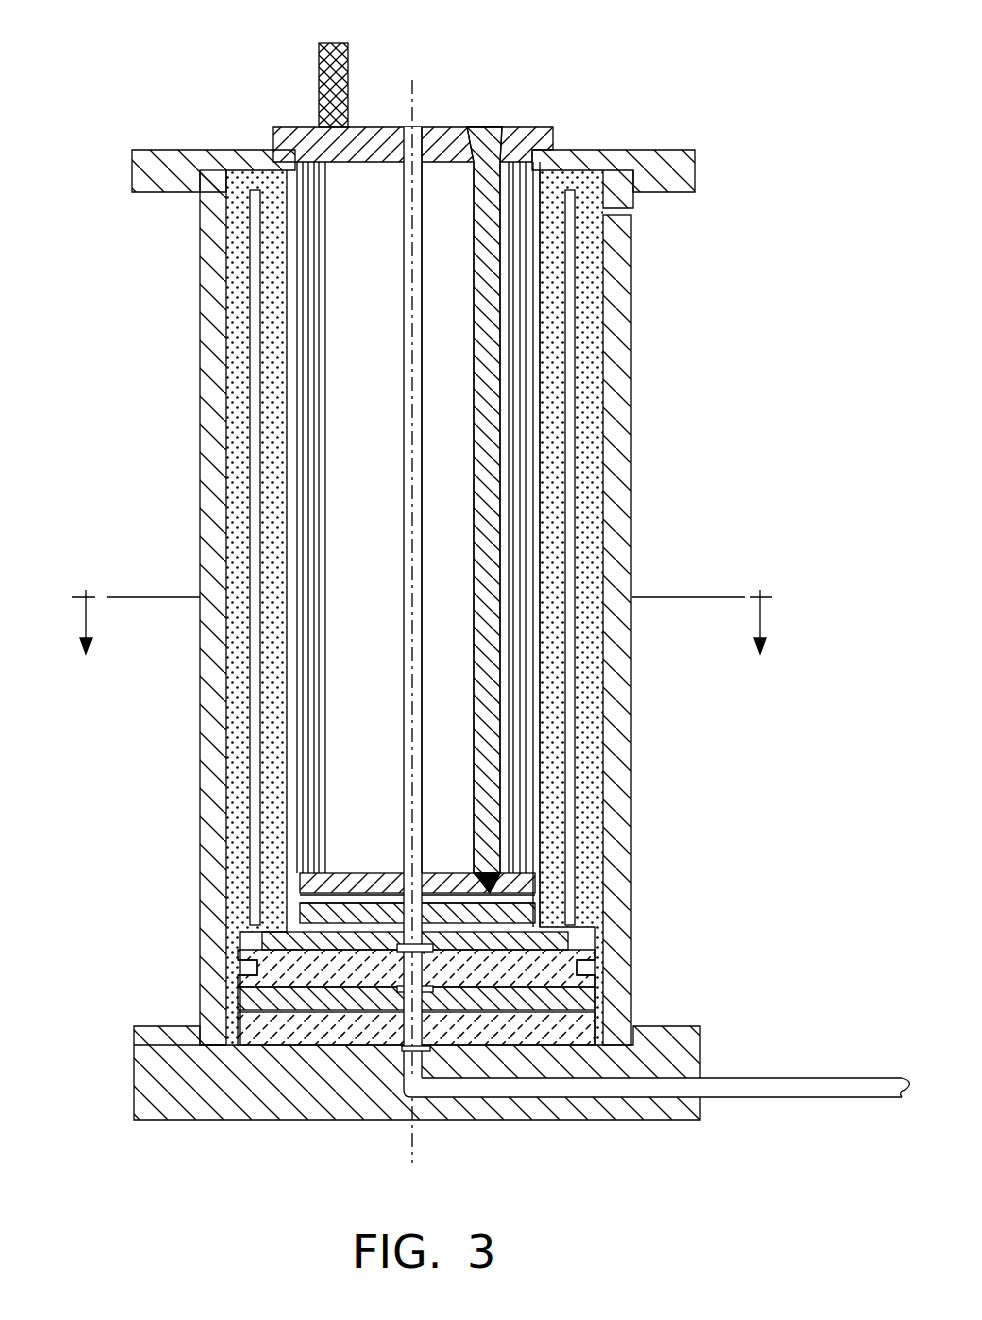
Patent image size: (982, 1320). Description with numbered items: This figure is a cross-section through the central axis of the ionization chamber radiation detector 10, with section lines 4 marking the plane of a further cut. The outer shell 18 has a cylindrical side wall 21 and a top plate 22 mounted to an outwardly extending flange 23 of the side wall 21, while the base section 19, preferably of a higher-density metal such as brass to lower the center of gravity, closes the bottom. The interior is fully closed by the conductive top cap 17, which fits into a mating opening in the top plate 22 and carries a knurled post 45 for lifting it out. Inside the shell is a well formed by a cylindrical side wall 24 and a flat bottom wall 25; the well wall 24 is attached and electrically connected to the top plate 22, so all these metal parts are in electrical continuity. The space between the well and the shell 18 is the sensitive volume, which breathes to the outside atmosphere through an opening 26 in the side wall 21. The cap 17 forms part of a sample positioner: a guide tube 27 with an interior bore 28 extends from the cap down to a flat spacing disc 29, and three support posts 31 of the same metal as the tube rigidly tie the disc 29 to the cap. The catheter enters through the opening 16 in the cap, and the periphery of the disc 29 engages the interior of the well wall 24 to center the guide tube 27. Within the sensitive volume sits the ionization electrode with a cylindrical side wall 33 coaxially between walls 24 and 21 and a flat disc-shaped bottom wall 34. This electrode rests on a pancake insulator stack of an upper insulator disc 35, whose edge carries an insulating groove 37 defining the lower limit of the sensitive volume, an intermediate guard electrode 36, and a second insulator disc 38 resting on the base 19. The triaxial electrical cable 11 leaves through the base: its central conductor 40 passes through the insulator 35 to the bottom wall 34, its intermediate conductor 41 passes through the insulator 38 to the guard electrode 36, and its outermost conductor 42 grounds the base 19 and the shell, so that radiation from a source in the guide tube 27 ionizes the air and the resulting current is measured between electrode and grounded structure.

The ionization chamber radiation detector 10 is at (162, 140).
The triaxial electrical cable 11 is at (757, 1078).
The opening 16 is at (415, 128).
The top cap 17 is at (530, 128).
The outer shell 18 is at (631, 748).
The base section 19 is at (135, 1100).
The cylindrical side wall 21 is at (200, 372).
The top plate 22 is at (648, 150).
The outwardly extending flange 23 is at (165, 192).
The cylindrical side wall of the well 24 is at (542, 245).
The flat bottom wall 25 is at (535, 915).
The opening 26 is at (630, 214).
The guide tube 27 is at (400, 285).
The interior bore 28 is at (421, 402).
The spacing disc 29 is at (400, 873).
The support posts 31 is at (478, 545).
The cylindrical side wall of the ionization electrode 33 is at (583, 577).
The flat disc-shaped bottom wall 34 is at (287, 928).
The insulator disc 35 is at (598, 998).
The intermediate guard electrode 36 is at (582, 967).
The insulating groove 37 is at (240, 978).
The second insulator disc 38 is at (243, 966).
The central conductor 40 is at (398, 948).
The intermediate conductor 41 is at (398, 990).
The outermost conductor 42 is at (404, 1050).
The knurled post 45 is at (320, 90).
The section line 4- 4 is at (422, 643).